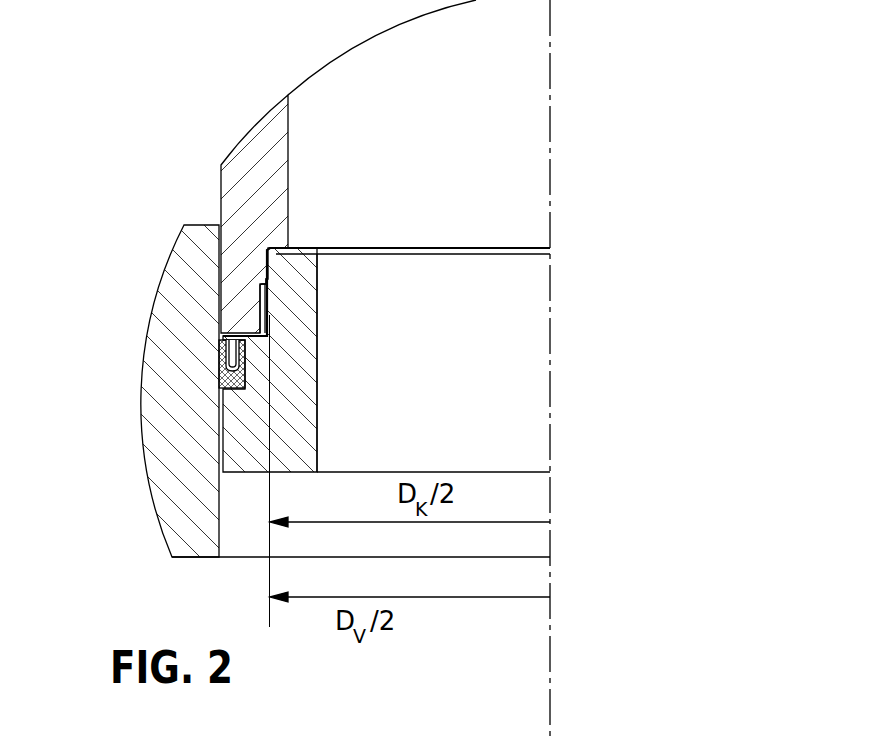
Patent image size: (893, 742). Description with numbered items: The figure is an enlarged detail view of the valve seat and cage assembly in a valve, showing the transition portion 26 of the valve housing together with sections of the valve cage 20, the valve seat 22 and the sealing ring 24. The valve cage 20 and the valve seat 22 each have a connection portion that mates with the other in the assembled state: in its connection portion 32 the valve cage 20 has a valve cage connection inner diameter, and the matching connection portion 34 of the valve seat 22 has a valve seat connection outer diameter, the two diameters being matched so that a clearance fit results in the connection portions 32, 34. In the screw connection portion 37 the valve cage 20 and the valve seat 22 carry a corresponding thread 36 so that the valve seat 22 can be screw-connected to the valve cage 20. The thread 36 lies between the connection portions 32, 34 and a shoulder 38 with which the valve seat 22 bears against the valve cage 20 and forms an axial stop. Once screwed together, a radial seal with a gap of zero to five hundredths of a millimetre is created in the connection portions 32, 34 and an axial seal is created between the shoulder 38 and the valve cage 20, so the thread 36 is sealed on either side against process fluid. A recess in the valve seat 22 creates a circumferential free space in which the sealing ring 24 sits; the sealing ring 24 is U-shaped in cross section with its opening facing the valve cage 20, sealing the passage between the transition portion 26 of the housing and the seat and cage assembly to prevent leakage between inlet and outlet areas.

The valve cage 20 is at (255, 147).
The valve seat 22 is at (243, 442).
The sealing ring 24 is at (218, 363).
The transition portion 26 is at (173, 293).
The connection portion 32 is at (263, 297).
The connection portion 34 is at (255, 290).
The thread 36 is at (268, 307).
The screw connection portion 37 is at (235, 318).
The shoulder 38 is at (250, 336).